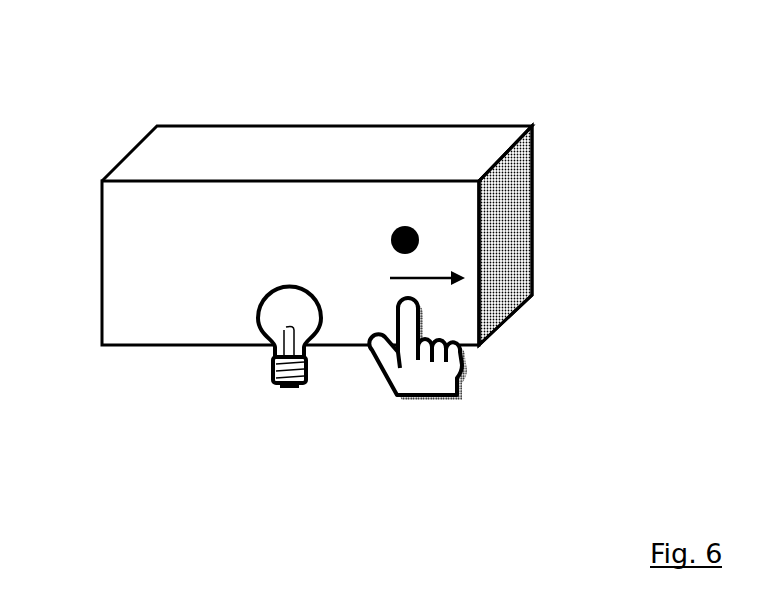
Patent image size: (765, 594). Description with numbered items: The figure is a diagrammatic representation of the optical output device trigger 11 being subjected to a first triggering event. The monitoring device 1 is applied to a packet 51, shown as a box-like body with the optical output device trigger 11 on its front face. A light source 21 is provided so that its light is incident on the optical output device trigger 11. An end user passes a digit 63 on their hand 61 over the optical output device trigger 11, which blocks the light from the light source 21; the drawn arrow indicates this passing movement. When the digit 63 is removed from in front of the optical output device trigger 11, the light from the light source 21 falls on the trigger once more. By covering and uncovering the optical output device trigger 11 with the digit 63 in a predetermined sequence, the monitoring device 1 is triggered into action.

The monitoring device 1 is at (387, 208).
The optical output device trigger 11 is at (410, 227).
The packet 51 is at (506, 130).
The digit 63 is at (410, 322).
The light source 21 is at (265, 352).
The hand 61 is at (433, 385).